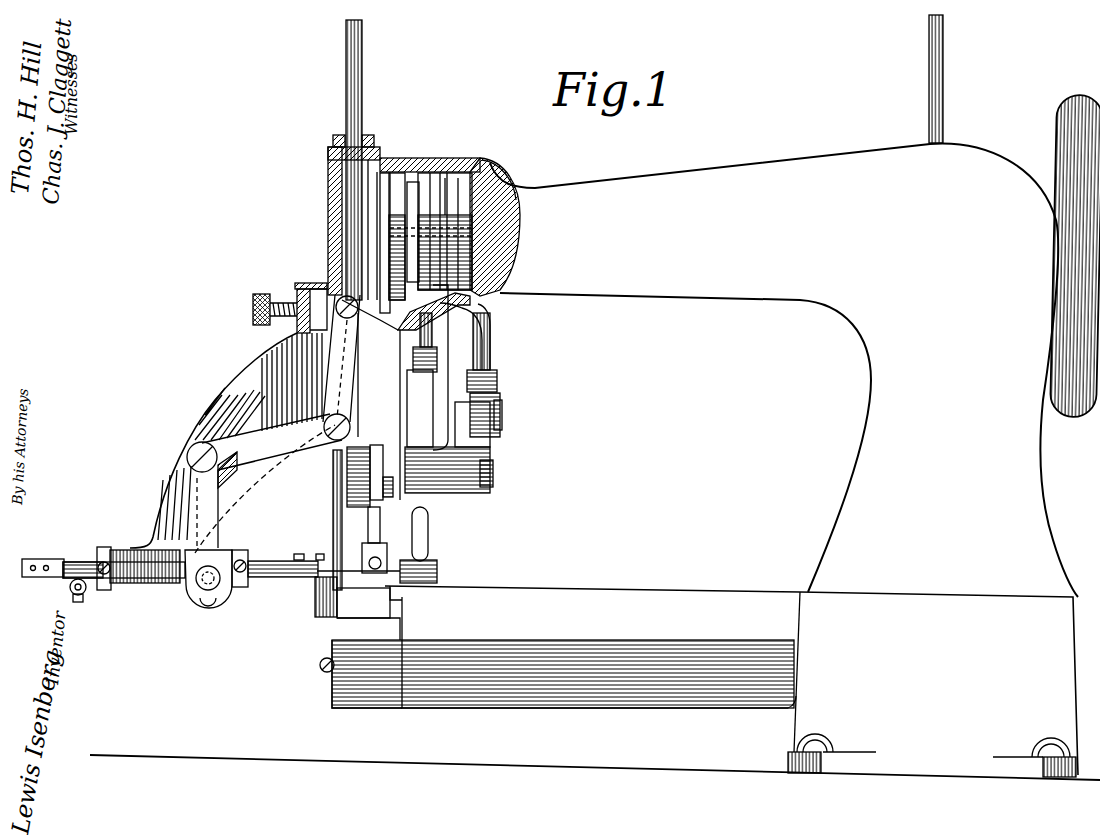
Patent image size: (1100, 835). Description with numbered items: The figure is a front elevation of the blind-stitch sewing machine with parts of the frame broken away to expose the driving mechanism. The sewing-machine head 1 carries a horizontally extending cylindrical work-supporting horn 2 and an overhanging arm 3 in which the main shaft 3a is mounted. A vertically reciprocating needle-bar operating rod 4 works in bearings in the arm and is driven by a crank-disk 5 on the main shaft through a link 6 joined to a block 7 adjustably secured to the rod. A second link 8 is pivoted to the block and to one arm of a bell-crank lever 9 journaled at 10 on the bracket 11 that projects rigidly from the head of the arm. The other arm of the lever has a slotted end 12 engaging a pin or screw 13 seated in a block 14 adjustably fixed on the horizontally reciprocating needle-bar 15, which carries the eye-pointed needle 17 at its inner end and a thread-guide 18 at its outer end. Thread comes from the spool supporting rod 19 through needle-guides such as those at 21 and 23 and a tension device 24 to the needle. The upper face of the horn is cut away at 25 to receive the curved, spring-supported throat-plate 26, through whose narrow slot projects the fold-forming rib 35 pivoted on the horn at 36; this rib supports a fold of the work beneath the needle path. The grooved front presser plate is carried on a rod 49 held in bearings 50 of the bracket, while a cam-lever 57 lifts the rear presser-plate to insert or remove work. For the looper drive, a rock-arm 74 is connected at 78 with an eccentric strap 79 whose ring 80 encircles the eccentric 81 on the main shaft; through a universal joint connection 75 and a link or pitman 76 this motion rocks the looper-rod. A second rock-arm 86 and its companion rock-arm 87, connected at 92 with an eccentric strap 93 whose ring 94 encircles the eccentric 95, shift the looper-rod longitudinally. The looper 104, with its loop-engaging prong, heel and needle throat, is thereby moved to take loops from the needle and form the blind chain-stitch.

The sewing-machine head 1 is at (1044, 528).
The work-supporting horn 2 is at (585, 590).
The overhanging arm 3 is at (636, 186).
The main shaft 3a is at (416, 178).
The needle-bar operating rod 4 is at (362, 100).
The crank-disk 5 is at (402, 296).
The link 6 is at (372, 220).
The block 7 is at (326, 268).
The link 8 is at (354, 356).
The bell-crank lever 9 is at (302, 442).
The journal 10 is at (186, 455).
The bracket 11 is at (268, 362).
The slotted end 12 is at (205, 608).
The pin or screw 13 is at (216, 584).
The block 14 is at (190, 580).
The needle-bar 15 is at (75, 562).
The needle 17 is at (322, 562).
The thread-guide 18 is at (72, 596).
The spool supporting rod 19 is at (944, 85).
The needle-guide 21 is at (300, 281).
The needle-guide 23 is at (36, 564).
The tension device 24 is at (292, 291).
The cut-away portion 25 is at (358, 620).
The throat-plate 26 is at (345, 605).
The fold-forming rib 35 is at (403, 600).
The pivot 36 is at (324, 672).
The rod 49 is at (66, 576).
The bearings 50 is at (106, 548).
The cam-lever 57 is at (428, 540).
The rock-arm 74 is at (436, 402).
The universal joint connection 75 is at (356, 486).
The link or pitman 76 is at (372, 520).
The connection 78 is at (408, 405).
The eccentric strap 79 is at (433, 330).
The ring 80 is at (438, 185).
The eccentric 81 is at (430, 172).
The rock-arm 86 is at (334, 505).
The rock-arm 87 is at (462, 440).
The connection 92 is at (500, 415).
The eccentric strap 93 is at (492, 340).
The ring 94 is at (490, 165).
The eccentric 95 is at (462, 185).
The looper 104 is at (382, 565).